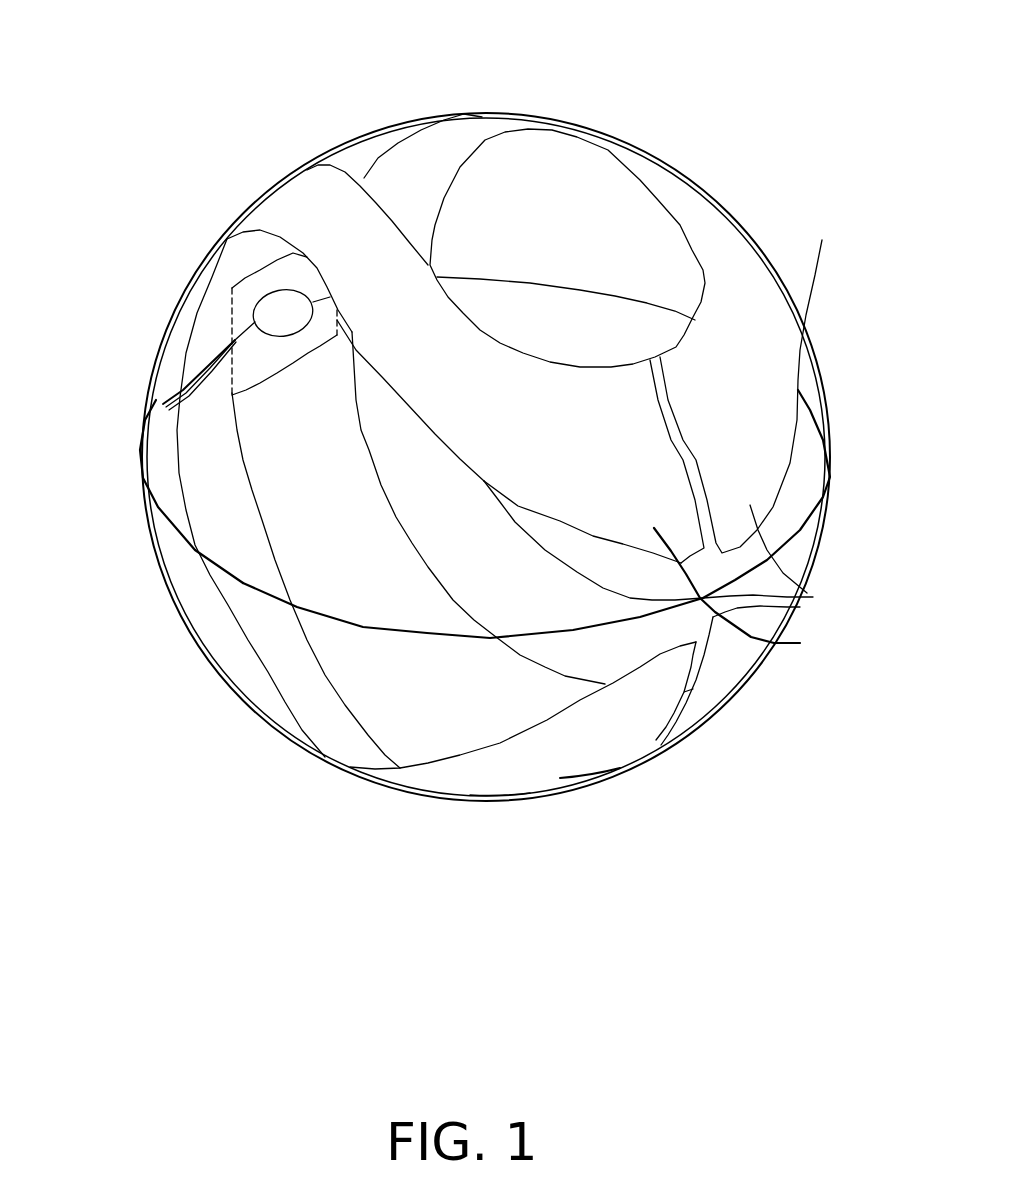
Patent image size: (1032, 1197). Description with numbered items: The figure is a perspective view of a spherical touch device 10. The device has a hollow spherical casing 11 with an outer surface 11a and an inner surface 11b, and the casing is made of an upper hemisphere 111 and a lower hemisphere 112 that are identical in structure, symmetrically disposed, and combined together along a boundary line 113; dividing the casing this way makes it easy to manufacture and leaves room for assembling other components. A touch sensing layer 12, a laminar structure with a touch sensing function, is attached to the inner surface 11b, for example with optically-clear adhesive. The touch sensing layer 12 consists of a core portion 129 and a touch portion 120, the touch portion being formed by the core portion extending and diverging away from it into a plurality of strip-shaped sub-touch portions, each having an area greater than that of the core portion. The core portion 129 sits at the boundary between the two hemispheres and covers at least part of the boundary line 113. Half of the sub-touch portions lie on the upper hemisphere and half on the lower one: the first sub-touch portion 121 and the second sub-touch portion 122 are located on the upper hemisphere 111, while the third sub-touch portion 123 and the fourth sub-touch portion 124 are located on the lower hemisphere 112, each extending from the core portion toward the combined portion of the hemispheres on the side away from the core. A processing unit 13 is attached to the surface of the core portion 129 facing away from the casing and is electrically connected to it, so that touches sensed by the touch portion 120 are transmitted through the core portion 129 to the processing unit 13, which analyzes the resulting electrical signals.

The spherical touch device 10 is at (433, 30).
The spherical casing 11 is at (63, 385).
The upper hemisphere 111 is at (157, 428).
The lower hemisphere 112 is at (170, 530).
The boundary line 113 is at (237, 580).
The outer surface 11a is at (598, 787).
The inner surface 11b is at (504, 800).
The touch sensing layer 12 is at (734, 268).
The touch portion 120 is at (708, 429).
The first sub-touch portion 121 is at (790, 597).
The second sub-touch portion 122 is at (800, 643).
The third sub-touch portion 123 is at (737, 650).
The fourth sub-touch portion 124 is at (660, 697).
The processing unit 13 is at (267, 293).
The core portion 129 is at (263, 348).